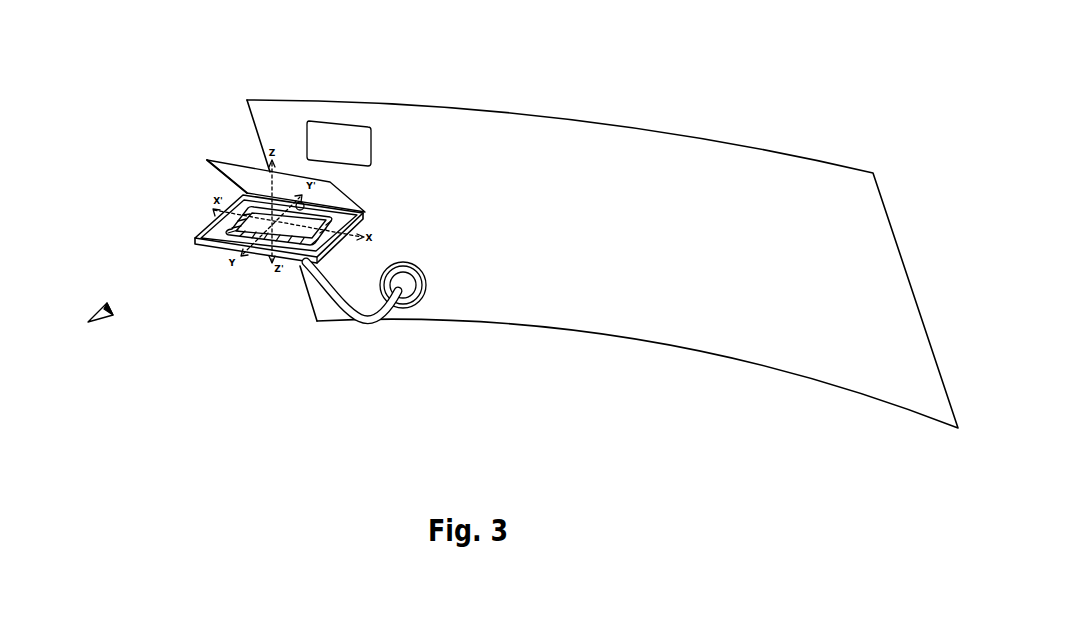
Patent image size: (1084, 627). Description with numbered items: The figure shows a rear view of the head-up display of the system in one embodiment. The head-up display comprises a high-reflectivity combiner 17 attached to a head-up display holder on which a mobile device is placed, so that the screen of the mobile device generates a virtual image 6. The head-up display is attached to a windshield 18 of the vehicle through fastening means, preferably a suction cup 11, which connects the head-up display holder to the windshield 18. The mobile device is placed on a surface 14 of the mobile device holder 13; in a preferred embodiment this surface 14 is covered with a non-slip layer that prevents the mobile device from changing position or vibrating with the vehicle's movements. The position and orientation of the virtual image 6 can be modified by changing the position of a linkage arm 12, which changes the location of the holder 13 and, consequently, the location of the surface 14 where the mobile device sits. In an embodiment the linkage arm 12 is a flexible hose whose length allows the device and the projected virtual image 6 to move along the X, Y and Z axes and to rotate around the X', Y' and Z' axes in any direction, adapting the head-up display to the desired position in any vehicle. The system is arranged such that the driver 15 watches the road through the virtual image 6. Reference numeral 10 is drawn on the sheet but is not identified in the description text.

The vehicle windshield 10 is at (262, 100).
The virtual image 6 is at (371, 147).
The high-reflectivity combiner 17 is at (222, 163).
The surface 14 is at (197, 233).
The mobile device holder 13 is at (210, 246).
The windshield 18 is at (212, 214).
The suction cup 11 is at (408, 267).
The linkage arm 12 is at (378, 326).
The driver 15 is at (100, 311).